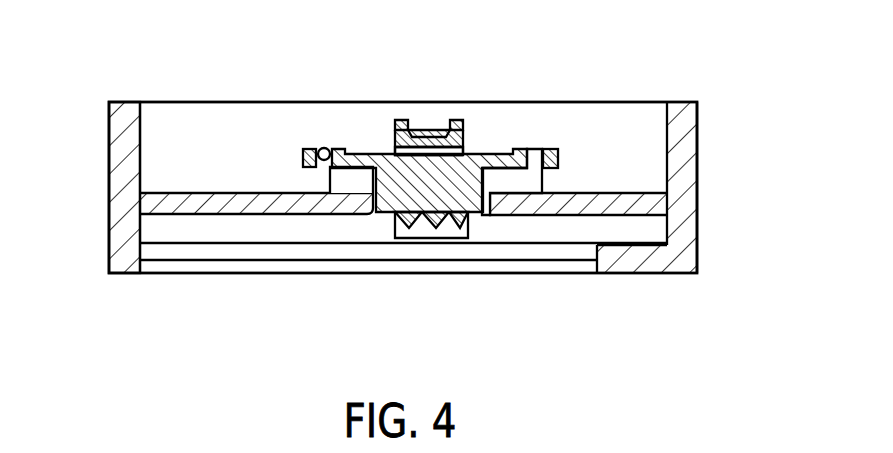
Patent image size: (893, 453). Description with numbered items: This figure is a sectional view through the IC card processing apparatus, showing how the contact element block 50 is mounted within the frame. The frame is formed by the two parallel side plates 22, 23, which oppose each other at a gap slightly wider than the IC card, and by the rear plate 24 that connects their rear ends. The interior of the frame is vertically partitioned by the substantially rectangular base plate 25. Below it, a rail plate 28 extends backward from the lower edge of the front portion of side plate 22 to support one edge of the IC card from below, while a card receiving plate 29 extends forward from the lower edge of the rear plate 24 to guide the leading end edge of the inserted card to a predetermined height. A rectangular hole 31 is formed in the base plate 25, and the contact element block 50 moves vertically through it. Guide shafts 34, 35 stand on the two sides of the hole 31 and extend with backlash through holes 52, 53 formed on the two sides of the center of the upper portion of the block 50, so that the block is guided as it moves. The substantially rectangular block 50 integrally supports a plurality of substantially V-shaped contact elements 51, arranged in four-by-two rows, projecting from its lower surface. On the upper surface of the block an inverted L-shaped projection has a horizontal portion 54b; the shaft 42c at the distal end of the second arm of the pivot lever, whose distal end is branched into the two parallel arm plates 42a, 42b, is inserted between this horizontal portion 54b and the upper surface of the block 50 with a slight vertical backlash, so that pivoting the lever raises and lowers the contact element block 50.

The side plate 22 is at (109, 181).
The side plate 23 is at (698, 180).
The rear plate 24 is at (163, 120).
The base plate 25 is at (201, 214).
The rail plate 28 is at (633, 262).
The card receiving plate 29 is at (379, 265).
The rectangular hole 31 is at (372, 213).
The guide shaft 34 is at (322, 148).
The guide shaft 35 is at (538, 150).
The arm plate 42a is at (400, 121).
The arm plate 42b is at (461, 121).
The shaft 42c is at (441, 140).
The contact element block 50 is at (480, 213).
The contact elements 51 is at (460, 230).
The hole 52 is at (319, 167).
The hole 53 is at (555, 150).
The horizontal portion 54b is at (421, 131).